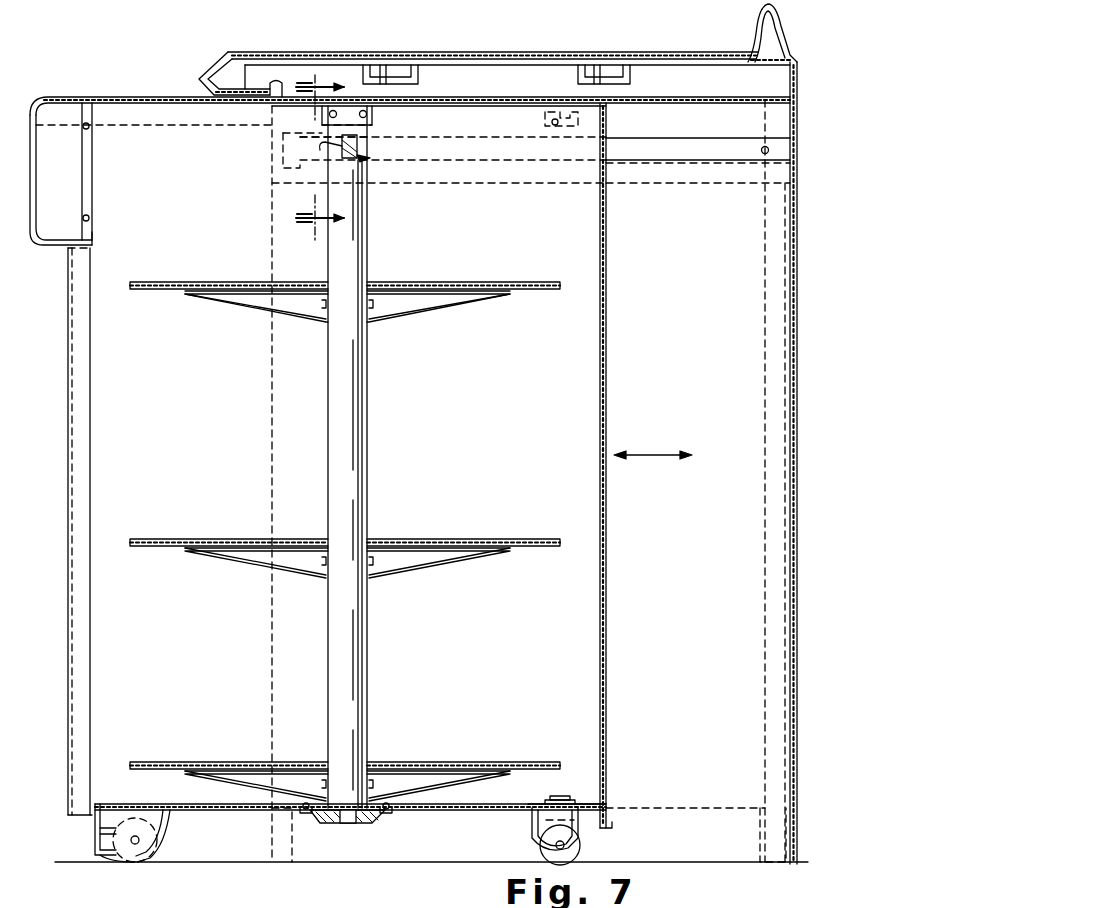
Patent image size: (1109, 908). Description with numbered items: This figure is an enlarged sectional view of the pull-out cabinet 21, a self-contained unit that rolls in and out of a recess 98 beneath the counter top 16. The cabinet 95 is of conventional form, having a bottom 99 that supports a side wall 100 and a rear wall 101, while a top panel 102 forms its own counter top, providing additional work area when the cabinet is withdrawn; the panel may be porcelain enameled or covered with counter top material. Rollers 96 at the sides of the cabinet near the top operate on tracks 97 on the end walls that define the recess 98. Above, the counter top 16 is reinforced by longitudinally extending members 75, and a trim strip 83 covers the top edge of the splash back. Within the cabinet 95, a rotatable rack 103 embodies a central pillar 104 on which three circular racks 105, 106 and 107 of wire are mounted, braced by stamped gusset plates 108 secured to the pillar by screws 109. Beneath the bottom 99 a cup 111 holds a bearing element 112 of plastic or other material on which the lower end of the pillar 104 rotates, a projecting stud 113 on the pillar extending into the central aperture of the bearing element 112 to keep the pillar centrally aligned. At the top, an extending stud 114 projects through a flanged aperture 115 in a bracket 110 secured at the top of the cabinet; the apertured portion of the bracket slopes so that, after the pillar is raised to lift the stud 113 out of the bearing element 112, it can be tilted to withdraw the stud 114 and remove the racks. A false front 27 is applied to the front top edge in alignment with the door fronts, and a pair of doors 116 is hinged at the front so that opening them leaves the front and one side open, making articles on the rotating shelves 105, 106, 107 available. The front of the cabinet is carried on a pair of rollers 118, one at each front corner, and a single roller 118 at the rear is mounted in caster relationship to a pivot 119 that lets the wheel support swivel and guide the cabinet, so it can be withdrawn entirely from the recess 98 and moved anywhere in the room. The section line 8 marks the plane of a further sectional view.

The section line 8— 8 is at (320, 158).
The counter top 16 is at (522, 52).
The pull-out cabinet 21 is at (108, 381).
The false front 27 is at (46, 248).
The longitudinally extending members 75 is at (410, 68).
The trim strip 83 is at (760, 24).
The cabinet 95 is at (482, 482).
The roller 96 is at (580, 118).
The tracks 97 is at (728, 122).
The recess 98 is at (740, 293).
The bottom 99 is at (538, 804).
The side wall 100 is at (598, 622).
The rear wall 101 is at (604, 672).
The top panel 102 is at (132, 99).
The rotatable rack 103 is at (383, 439).
The central pillar 104 is at (360, 470).
The circular rack 105 is at (480, 762).
The circular rack 106 is at (452, 539).
The circular rack 107 is at (482, 282).
The gusset plates 108 is at (438, 304).
The screws 109 is at (380, 290).
The bracket 110 is at (376, 114).
The cup 111 is at (374, 826).
The bearing element 112 is at (310, 822).
The projecting stud 113 is at (342, 823).
The extending stud 114 is at (374, 123).
The flanged aperture 115 is at (372, 154).
The doors 116 is at (72, 730).
The rollers 118 is at (152, 862).
The pivot 119 is at (568, 800).